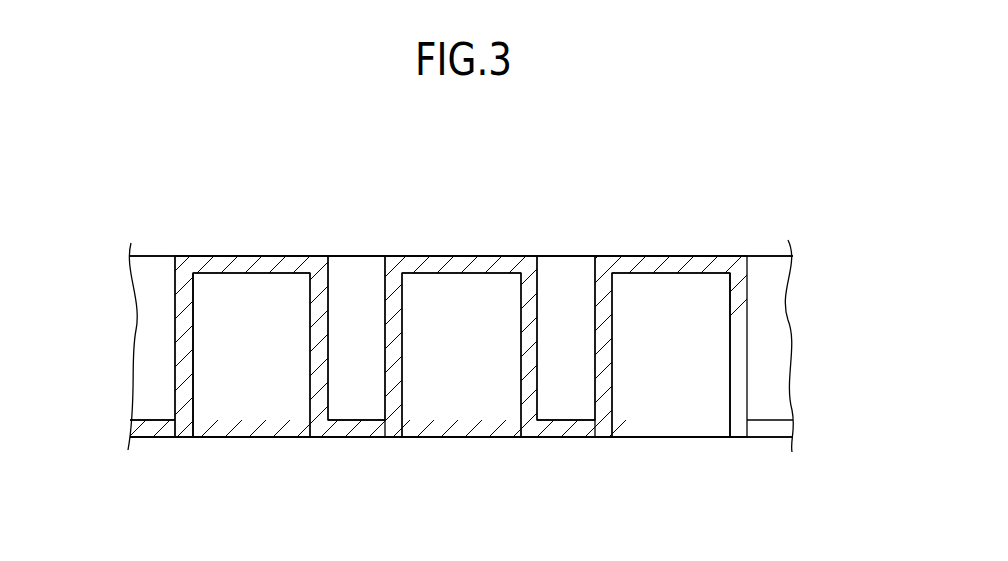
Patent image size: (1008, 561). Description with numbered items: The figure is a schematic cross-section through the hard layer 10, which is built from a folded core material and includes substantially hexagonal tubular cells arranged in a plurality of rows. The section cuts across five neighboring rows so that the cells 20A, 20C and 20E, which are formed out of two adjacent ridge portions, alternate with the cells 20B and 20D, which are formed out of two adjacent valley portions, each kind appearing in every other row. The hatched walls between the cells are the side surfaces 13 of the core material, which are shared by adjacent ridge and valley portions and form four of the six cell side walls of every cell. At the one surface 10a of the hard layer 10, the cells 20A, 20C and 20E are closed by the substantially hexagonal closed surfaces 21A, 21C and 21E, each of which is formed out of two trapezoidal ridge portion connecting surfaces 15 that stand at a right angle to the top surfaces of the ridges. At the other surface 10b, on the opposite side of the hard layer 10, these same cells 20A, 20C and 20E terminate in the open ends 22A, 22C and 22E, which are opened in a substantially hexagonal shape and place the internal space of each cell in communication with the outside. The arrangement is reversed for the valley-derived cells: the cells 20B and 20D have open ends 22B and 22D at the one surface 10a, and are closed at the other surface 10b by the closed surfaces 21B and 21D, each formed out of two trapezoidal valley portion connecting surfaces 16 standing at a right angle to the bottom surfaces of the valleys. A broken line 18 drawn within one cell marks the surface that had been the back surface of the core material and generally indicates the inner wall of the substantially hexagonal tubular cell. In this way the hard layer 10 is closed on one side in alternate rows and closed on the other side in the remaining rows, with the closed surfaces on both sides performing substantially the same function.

The hard layer 10 is at (780, 207).
The one surface 10a is at (775, 256).
The other surface 10b is at (760, 440).
The side surface 13 is at (747, 340).
The ridge portion connecting surface 15 is at (200, 256).
The valley portion connecting surface 16 is at (155, 437).
The broken line 18 is at (738, 305).
The cell 20A is at (230, 345).
The cell 20B is at (355, 287).
The cell 20C is at (467, 295).
The cell 20D is at (568, 288).
The cell 20E is at (677, 293).
The closed surface 21A is at (247, 256).
The closed surface 21B is at (352, 437).
The closed surface 21C is at (462, 256).
The closed surface 21D is at (562, 437).
The closed surface 21E is at (670, 256).
The open end 22A is at (255, 437).
The open end 22B is at (362, 256).
The open end 22C is at (460, 437).
The open end 22D is at (565, 256).
The open end 22E is at (675, 437).